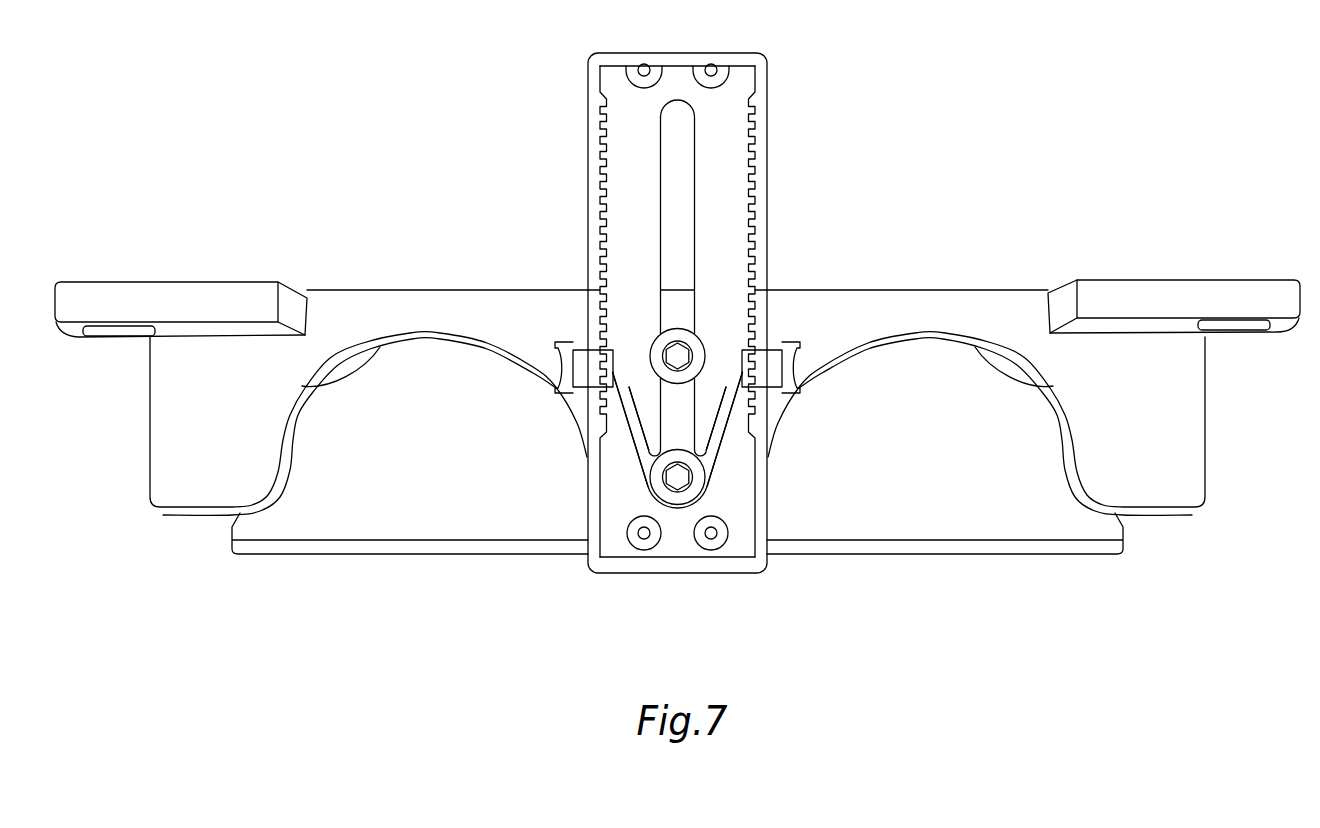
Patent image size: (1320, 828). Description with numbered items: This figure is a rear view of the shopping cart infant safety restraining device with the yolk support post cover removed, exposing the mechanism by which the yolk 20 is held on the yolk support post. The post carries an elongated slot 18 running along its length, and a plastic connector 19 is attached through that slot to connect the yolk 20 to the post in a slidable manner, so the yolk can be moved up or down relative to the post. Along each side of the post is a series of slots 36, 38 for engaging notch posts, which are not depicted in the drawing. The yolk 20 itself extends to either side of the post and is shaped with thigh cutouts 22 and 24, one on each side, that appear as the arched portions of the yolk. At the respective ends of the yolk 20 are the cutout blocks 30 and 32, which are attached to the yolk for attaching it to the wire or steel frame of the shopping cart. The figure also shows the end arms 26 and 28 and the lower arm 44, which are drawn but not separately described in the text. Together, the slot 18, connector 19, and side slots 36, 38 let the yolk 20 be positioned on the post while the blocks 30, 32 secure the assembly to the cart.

The elongated slot 18 is at (680, 165).
The plastic connector 19 is at (687, 417).
The yolk 20 is at (927, 298).
The thigh cutout 22 is at (1005, 363).
The thigh cutout 24 is at (350, 363).
The right support arm 26 is at (1155, 292).
The left support arm 28 is at (195, 295).
The cutout block 30 is at (1255, 327).
The cutout block 32 is at (629, 440).
The slots 36 is at (603, 216).
The slots 38 is at (757, 216).
The right link arm 44 is at (723, 438).